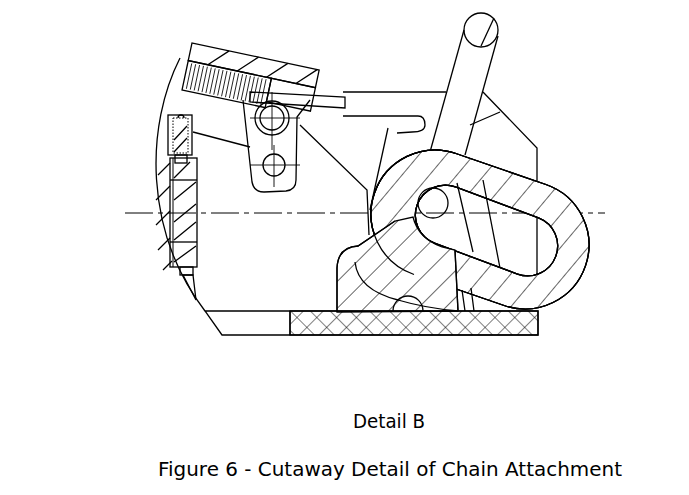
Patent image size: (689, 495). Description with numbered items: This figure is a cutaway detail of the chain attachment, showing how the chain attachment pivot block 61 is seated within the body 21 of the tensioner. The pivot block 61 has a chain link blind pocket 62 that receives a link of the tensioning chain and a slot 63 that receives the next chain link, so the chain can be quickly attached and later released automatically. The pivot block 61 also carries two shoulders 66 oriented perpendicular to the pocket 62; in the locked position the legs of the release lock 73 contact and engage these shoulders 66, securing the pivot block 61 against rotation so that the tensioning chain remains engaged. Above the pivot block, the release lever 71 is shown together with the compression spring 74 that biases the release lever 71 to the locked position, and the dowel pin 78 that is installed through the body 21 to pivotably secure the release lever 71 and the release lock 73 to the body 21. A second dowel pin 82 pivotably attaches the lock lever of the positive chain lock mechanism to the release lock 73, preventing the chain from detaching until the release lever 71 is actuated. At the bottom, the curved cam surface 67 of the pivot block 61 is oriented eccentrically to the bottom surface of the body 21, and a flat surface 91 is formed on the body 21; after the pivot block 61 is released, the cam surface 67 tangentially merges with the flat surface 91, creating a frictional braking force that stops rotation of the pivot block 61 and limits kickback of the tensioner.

The body 21 is at (443, 337).
The chain attachment pivot block 61 is at (480, 237).
The chain link blind pocket 62 is at (470, 142).
The slot 63 is at (337, 312).
The shoulders 66 is at (372, 115).
The curved cam surface 67 is at (513, 337).
The release lever 71 is at (208, 112).
The release lock 73 is at (263, 185).
The compression spring 74 is at (186, 73).
The dowel pin 78 is at (288, 105).
The dowel pin 82 is at (255, 178).
The flat surface 91 is at (400, 316).